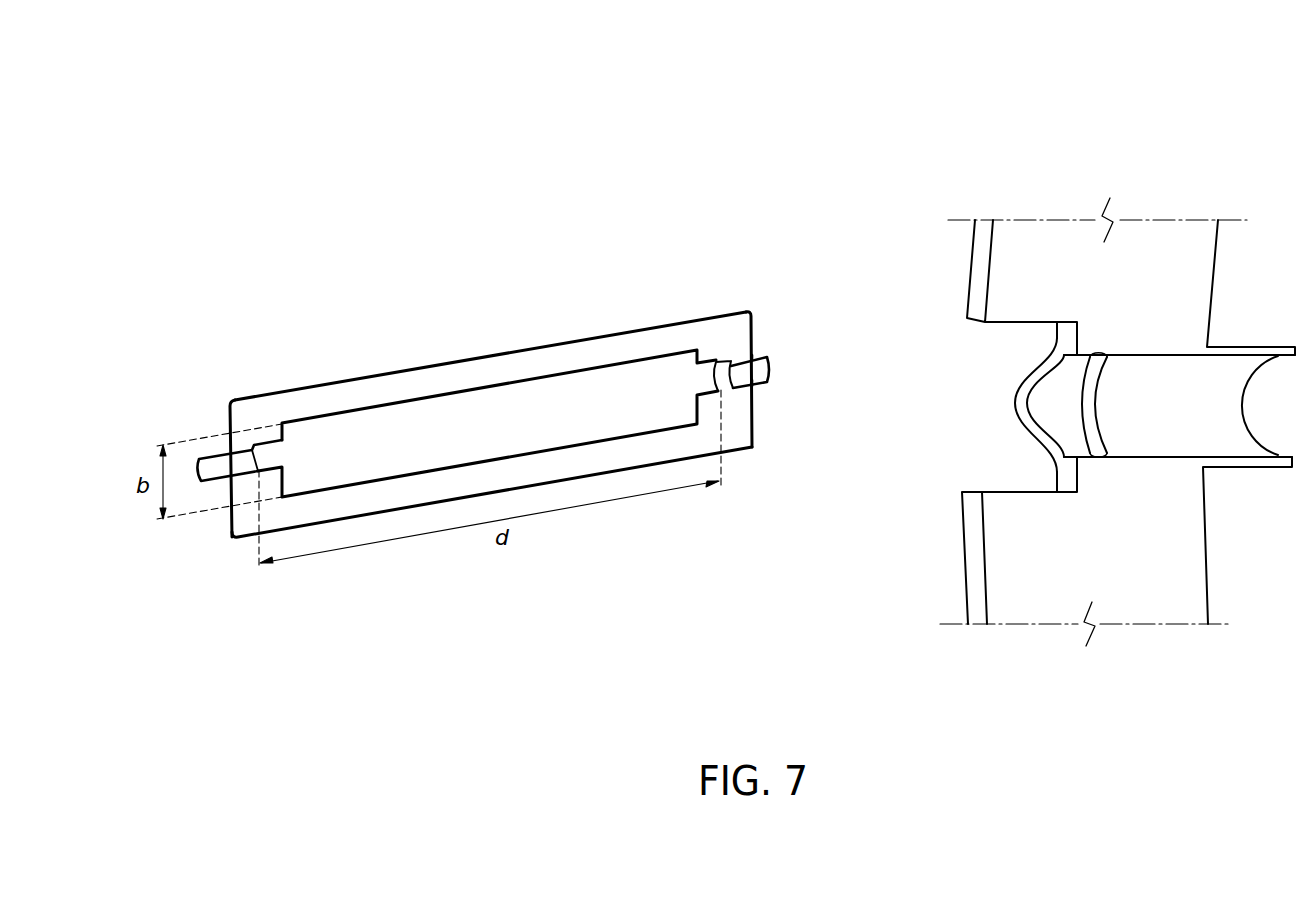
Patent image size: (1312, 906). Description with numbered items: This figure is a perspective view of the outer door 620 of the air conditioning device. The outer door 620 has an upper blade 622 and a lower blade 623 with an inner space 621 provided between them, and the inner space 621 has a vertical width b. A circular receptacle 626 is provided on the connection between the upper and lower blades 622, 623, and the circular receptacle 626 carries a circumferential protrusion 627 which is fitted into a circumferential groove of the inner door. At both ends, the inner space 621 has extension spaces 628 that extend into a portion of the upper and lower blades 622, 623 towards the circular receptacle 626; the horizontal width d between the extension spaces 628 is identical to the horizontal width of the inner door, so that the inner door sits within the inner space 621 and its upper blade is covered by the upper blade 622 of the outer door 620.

The outer door 620 is at (715, 263).
The inner space 621 is at (611, 400).
The upper blade 622 is at (677, 340).
The lower blade 623 is at (667, 444).
The circular receptacle 626 is at (1177, 367).
The circumferential protrusion 627 is at (1087, 403).
The extension space 628 is at (995, 411).